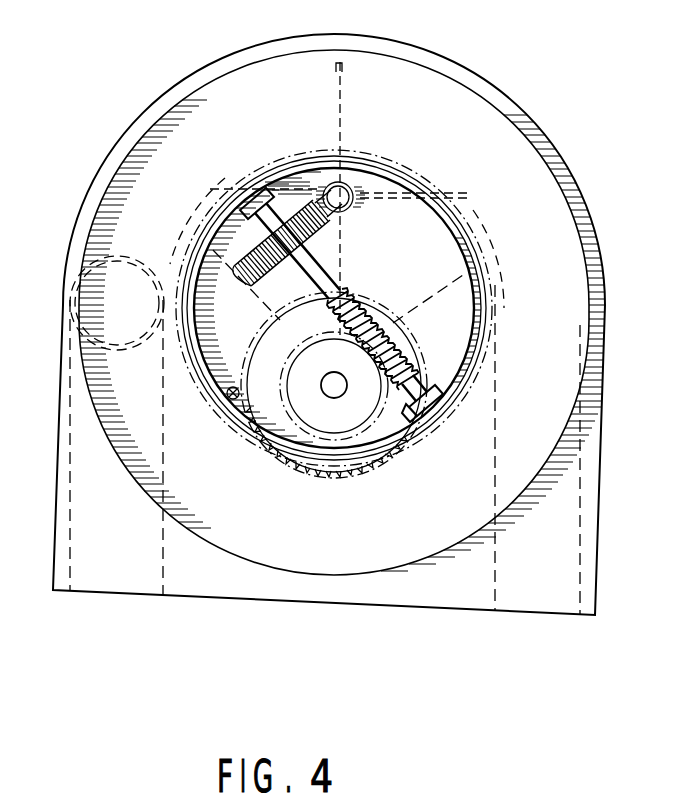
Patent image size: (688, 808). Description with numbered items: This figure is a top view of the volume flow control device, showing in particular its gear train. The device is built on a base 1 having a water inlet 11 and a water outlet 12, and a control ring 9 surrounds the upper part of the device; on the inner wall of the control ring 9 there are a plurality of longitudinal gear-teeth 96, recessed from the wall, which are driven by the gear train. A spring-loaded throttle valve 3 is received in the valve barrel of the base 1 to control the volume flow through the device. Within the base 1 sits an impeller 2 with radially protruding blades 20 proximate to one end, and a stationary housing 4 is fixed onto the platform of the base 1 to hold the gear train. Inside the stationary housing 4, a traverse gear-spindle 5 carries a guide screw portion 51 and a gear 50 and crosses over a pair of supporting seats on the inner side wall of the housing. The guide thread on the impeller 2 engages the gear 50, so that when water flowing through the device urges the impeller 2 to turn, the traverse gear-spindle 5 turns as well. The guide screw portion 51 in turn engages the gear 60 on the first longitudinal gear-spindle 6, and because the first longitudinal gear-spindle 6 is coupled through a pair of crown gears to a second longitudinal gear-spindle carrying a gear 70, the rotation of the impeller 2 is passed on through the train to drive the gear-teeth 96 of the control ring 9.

The base 1 is at (552, 146).
The control ring 9 is at (498, 122).
The throttle valve 3 is at (66, 283).
The water outlet 12 is at (108, 592).
The water inlet 11 is at (537, 612).
The stationary housing 4 is at (225, 404).
The longitudinal gear-teeth 96 is at (395, 462).
The impeller 2 is at (345, 190).
The radially protruding blades 20 is at (345, 100).
The traverse gear-spindle 5 is at (332, 271).
The guide screw portion 51 is at (398, 362).
The gear 50 is at (262, 278).
The first longitudinal gear-spindle 6 is at (330, 389).
The gear 60 is at (372, 397).
The gear 70 is at (250, 398).